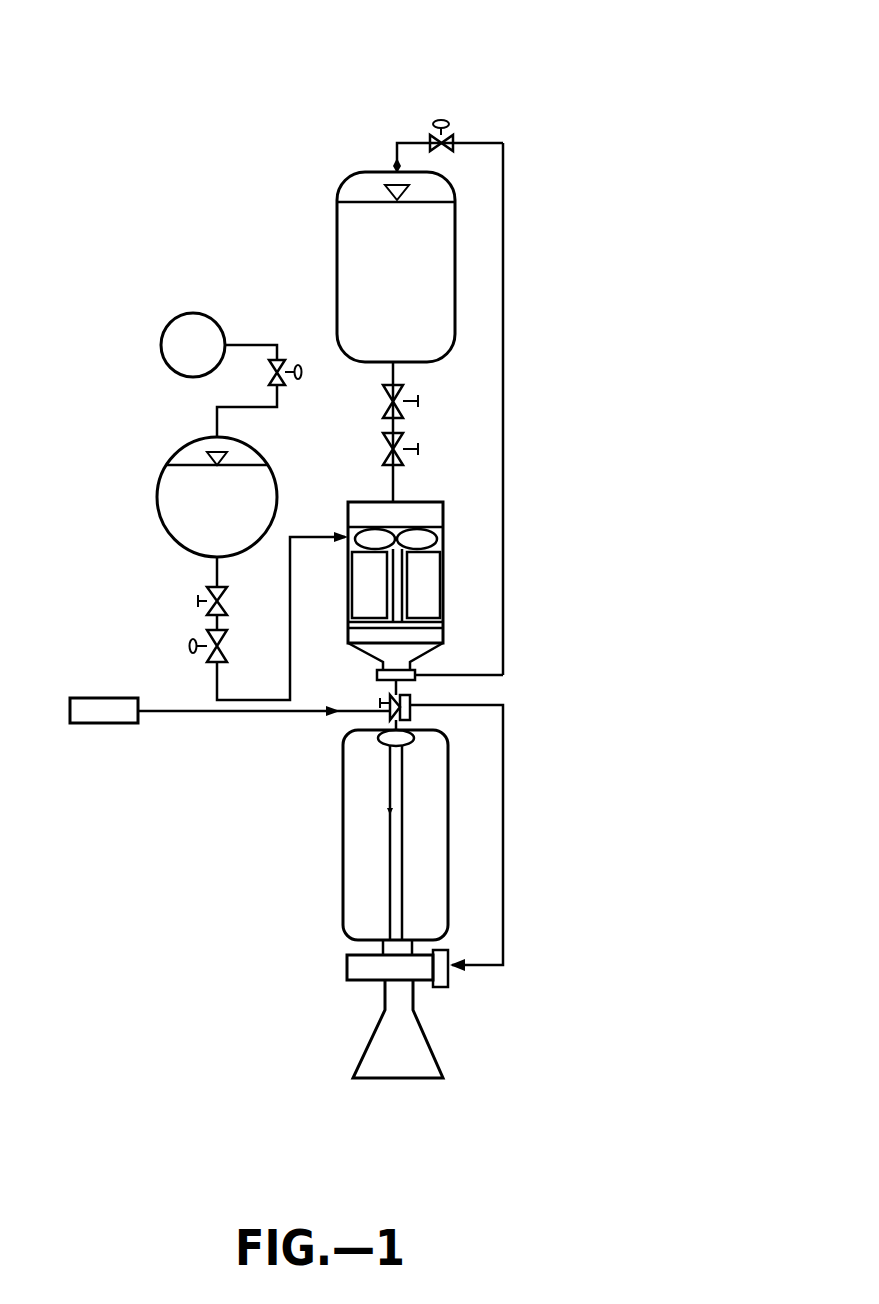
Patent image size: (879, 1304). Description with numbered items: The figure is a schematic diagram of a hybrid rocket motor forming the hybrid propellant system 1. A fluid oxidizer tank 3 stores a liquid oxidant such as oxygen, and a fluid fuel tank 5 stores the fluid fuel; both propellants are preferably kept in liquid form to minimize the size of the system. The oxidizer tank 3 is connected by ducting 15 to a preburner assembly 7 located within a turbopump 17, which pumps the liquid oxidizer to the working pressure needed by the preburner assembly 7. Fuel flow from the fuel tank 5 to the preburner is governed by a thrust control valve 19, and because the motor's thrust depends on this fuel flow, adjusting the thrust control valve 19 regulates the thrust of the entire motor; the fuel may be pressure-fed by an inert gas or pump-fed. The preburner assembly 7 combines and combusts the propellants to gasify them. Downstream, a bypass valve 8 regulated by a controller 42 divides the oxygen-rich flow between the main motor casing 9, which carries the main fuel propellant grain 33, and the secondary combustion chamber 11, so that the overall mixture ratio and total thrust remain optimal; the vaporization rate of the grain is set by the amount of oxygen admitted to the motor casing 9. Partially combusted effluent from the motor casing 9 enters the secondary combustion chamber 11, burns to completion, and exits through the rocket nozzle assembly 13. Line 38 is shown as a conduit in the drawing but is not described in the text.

The hybrid propellant system 1 is at (695, 52).
The fluid oxidizer tank 3 is at (347, 258).
The fluid fuel tank 5 is at (165, 510).
The preburner assembly 7 is at (432, 590).
The bypass valve 8 is at (390, 714).
The main motor casing 9 is at (448, 771).
The secondary combustion chamber 11 is at (404, 971).
The rocket nozzle assembly 13 is at (357, 1045).
The ducting 15 is at (395, 487).
The turbopump 17 is at (443, 512).
The thrust control valve 19 is at (190, 645).
The main fuel propellant grain 33 is at (361, 865).
The conduit 38 is at (503, 853).
The controller 42 is at (103, 710).